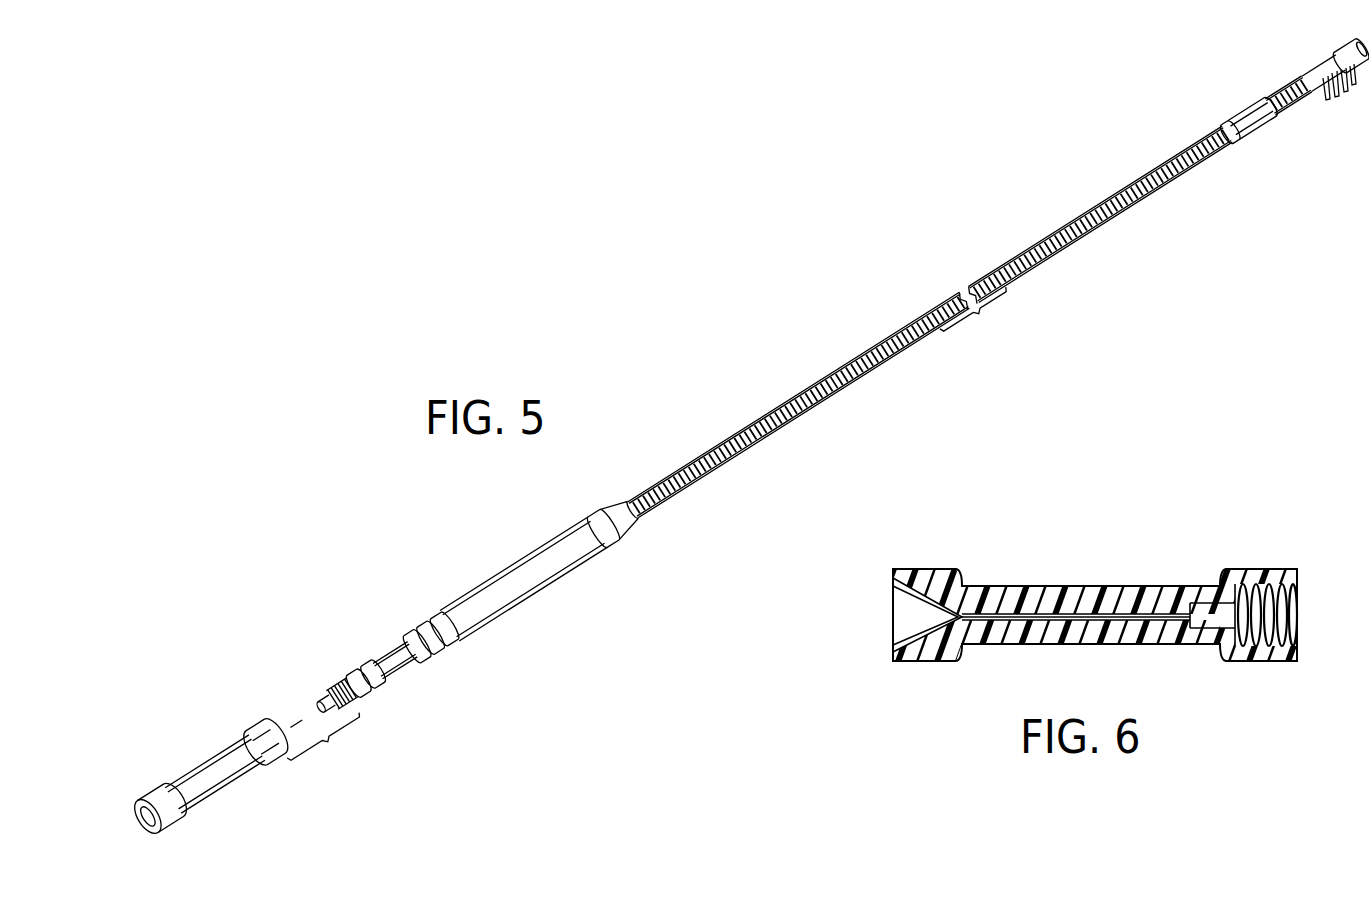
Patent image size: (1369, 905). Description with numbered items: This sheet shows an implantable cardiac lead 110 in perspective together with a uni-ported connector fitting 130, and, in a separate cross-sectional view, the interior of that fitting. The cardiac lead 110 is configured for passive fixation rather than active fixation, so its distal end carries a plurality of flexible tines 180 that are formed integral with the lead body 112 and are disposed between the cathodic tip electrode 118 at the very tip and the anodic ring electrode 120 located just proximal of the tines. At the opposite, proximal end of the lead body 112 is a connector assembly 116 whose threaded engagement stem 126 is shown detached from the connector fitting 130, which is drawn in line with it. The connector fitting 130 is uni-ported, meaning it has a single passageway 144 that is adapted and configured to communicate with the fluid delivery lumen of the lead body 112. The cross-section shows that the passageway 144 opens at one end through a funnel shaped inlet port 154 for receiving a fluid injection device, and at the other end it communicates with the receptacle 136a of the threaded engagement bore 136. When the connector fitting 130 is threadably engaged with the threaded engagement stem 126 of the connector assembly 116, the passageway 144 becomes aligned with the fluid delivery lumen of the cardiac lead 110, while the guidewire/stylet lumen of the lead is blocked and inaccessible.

In FIG. 5, the cardiac lead 110 is at (770, 340).
In FIG. 5, the lead body 112 is at (797, 418).
In FIG. 5, the connector assembly 116 is at (385, 635).
In FIG. 5, the cathodic tip electrode 118 is at (1360, 75).
In FIG. 5, the anodic ring electrode 120 is at (1257, 118).
In FIG. 5, the threaded engagement stem 126 is at (324, 692).
In FIG. 5, the uni-ported connector fitting 130 is at (213, 778).
In FIG. 6, the uni-ported connector fitting 130 is at (1103, 587).
In FIG. 6, the threaded engagement bore 136 is at (1296, 610).
In FIG. 6, the receptacle 136a is at (1205, 611).
In FIG. 6, the passageway 144 is at (1033, 617).
In FIG. 6, the funnel shaped inlet port 154 is at (905, 622).
In FIG. 5, the flexible tines 180 is at (1330, 53).